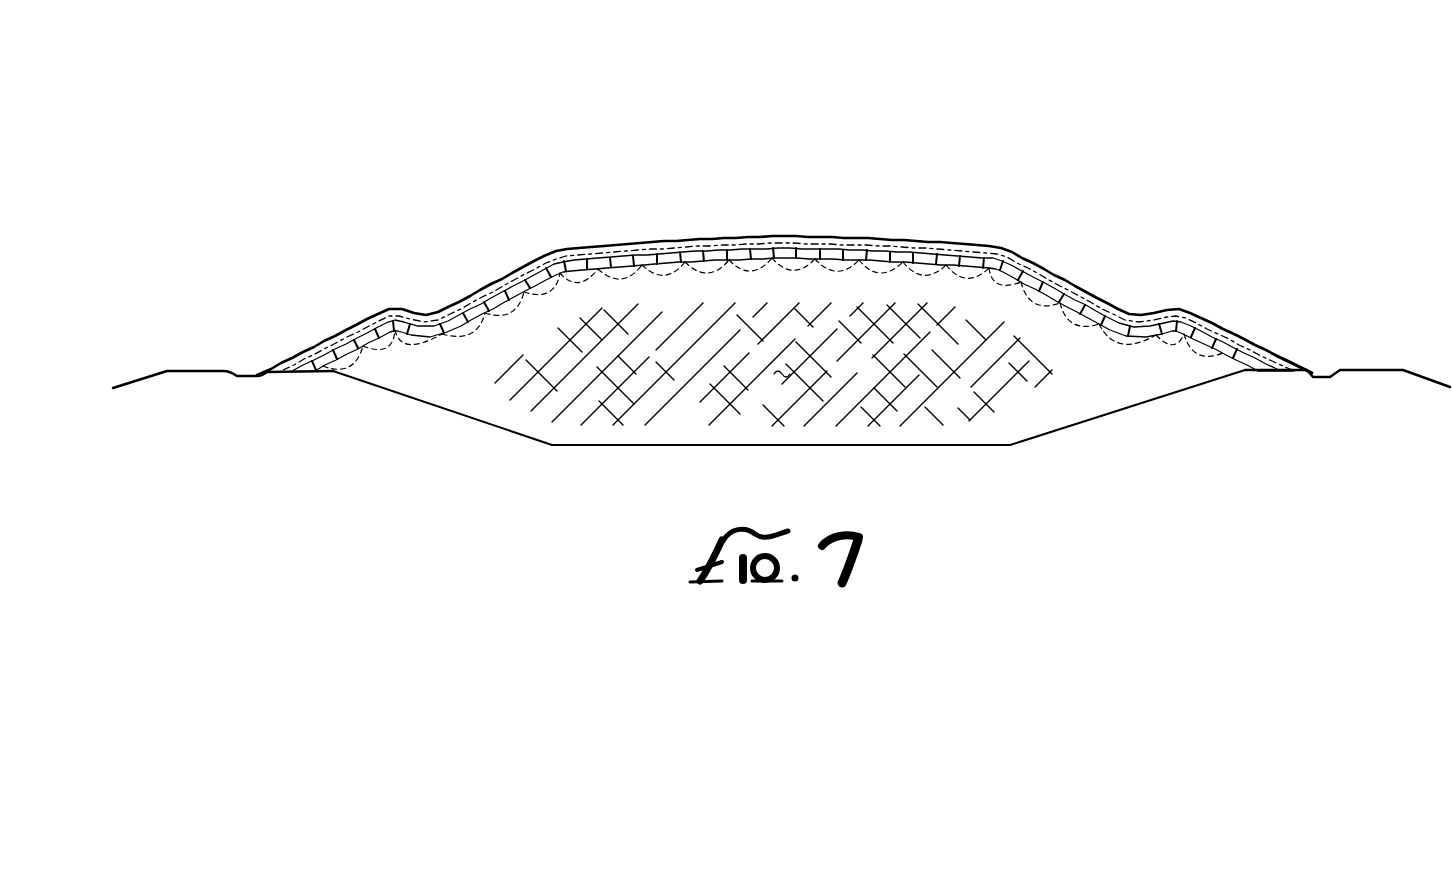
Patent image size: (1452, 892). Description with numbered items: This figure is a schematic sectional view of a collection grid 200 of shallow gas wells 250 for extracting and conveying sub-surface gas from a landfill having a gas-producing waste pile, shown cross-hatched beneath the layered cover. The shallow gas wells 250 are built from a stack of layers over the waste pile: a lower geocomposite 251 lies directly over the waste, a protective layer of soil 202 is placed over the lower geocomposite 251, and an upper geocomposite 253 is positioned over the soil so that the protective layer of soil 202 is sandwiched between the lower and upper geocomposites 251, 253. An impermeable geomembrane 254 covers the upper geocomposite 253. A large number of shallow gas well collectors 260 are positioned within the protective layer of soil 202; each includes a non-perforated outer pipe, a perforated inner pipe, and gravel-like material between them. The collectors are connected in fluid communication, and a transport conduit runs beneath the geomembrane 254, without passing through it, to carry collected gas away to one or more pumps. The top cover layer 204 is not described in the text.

The collection grid 200 is at (481, 122).
The protective layer of soil 202 is at (922, 260).
The top cover layer 204 is at (730, 237).
The shallow gas wells 250 is at (824, 238).
The lower geocomposite 251 is at (1247, 373).
The upper geocomposite 253 is at (1258, 366).
The impermeable geomembrane 254 is at (1245, 367).
The shallow gas well collectors 260 is at (872, 253).